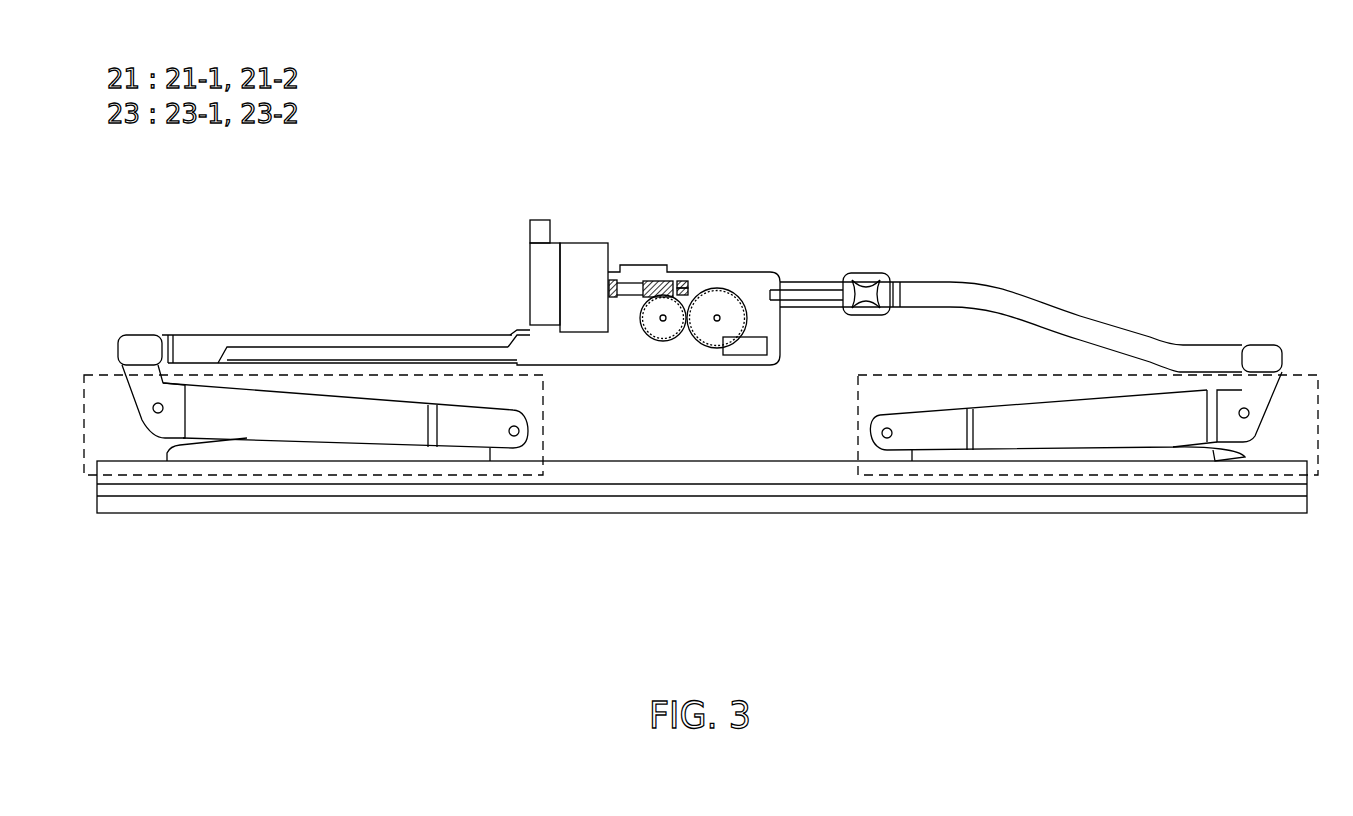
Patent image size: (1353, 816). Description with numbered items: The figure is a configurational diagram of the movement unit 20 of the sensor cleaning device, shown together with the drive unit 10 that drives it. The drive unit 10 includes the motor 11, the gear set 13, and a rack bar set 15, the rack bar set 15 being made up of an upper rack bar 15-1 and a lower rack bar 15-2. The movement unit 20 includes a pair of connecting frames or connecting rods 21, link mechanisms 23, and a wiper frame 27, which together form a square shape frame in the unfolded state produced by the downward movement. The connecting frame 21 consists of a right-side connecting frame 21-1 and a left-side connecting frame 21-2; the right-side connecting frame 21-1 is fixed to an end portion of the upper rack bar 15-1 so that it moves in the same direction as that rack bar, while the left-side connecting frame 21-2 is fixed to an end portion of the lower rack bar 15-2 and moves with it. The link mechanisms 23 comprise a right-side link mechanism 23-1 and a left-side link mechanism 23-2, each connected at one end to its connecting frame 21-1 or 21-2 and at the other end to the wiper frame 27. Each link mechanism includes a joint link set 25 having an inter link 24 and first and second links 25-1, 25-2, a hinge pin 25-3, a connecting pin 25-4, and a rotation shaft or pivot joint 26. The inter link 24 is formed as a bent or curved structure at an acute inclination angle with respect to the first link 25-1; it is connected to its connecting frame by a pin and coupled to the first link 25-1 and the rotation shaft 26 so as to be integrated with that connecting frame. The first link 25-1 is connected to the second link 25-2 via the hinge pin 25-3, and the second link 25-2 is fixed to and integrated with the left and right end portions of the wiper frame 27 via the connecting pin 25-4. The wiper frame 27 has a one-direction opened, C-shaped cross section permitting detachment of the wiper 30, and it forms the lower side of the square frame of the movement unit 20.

The drive unit 10 is at (758, 131).
The motor 11 is at (580, 282).
The gear set 13 is at (650, 298).
The rack bar set 15 is at (823, 178).
The upper rack bar 15-1 is at (758, 296).
The lower rack bar 15-2 is at (750, 345).
The movement unit 20 is at (701, 363).
The connecting frame 21 is at (702, 273).
The right-side connecting frame 21-1 is at (1023, 290).
The left-side connecting frame 21-2 is at (288, 336).
The link mechanisms 23 is at (714, 415).
The right-side link mechanism 23-1 is at (1293, 370).
The left-side link mechanism 23-2 is at (220, 470).
The inter link 24 is at (142, 400).
The joint link set 25 is at (285, 420).
The first link 25-1 is at (1063, 420).
The second link 25-2 is at (983, 457).
The hinge pin 25-3 is at (880, 437).
The connecting pin 25-4 is at (1213, 457).
The rotation shaft 26 is at (1244, 418).
The wiper frame 27 is at (610, 472).
The wiper 30 is at (477, 502).